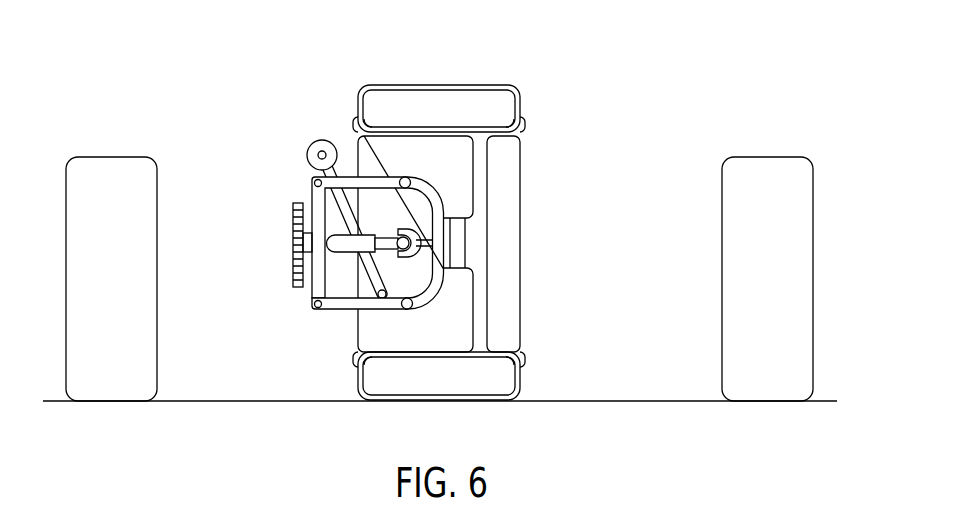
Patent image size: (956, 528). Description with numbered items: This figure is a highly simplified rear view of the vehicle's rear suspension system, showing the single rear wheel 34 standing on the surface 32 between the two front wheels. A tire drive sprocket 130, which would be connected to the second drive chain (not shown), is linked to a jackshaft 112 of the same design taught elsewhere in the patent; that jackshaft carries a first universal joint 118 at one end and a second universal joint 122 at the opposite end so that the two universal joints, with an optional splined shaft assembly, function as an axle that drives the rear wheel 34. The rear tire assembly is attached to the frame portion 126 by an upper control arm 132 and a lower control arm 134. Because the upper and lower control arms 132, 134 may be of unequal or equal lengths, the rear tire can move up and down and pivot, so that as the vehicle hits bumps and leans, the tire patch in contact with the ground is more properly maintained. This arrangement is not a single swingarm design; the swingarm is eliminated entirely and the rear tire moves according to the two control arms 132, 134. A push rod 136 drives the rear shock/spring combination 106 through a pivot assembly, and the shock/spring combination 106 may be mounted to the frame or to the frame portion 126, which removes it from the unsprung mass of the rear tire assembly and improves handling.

The surface 32 is at (440, 424).
The rear wheel 34 is at (439, 226).
The rear shock/spring combination 106 is at (292, 130).
The jackshaft 112 is at (460, 195).
The first universal joint 118 is at (499, 212).
The second universal joint 122 is at (312, 234).
The frame portion 126 is at (300, 214).
The rear wheel drive sprocket 130 is at (258, 248).
The upper control arm 132 is at (429, 166).
The lower control arm 134 is at (326, 329).
The push rod 136 is at (321, 331).